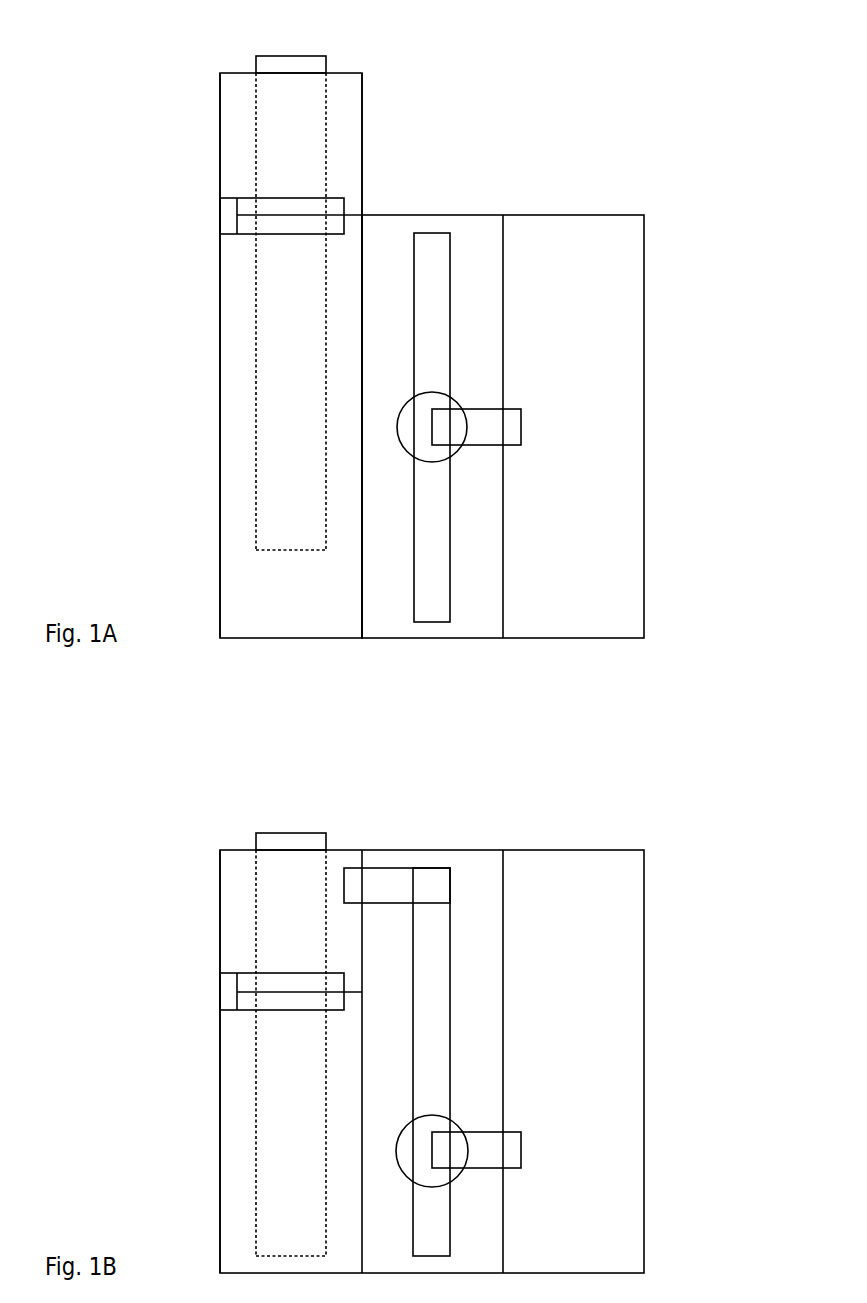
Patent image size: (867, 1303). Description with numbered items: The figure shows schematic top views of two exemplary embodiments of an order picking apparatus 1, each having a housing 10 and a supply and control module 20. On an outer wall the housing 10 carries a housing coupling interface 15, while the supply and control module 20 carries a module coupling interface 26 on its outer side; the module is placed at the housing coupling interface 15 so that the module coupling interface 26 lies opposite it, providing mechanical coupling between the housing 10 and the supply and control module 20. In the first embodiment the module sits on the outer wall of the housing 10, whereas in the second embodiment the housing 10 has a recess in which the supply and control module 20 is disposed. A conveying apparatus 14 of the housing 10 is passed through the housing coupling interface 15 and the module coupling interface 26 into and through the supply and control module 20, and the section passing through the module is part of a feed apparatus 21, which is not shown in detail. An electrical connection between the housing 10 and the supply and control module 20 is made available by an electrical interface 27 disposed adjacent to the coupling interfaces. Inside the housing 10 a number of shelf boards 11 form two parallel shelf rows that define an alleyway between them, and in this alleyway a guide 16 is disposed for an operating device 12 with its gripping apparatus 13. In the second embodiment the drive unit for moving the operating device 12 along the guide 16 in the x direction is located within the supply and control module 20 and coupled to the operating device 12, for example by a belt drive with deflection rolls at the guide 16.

In FIG. 1A, the order picking apparatus 1 is at (622, 149).
In FIG. 1B, the order picking apparatus 1 is at (641, 819).
In FIG. 1A, the housing 10 is at (644, 304).
In FIG. 1A, the shelf boards 11 is at (573, 603).
In FIG. 1B, the shelf boards 11 is at (573, 885).
In FIG. 1A, the operating device 12 is at (427, 453).
In FIG. 1B, the operating device 12 is at (427, 1177).
In FIG. 1A, the gripping apparatus 13 is at (485, 427).
In FIG. 1B, the gripping apparatus 13 is at (486, 1151).
In FIG. 1A, the conveying apparatus 14 is at (308, 550).
In FIG. 1B, the conveying apparatus 14 is at (308, 833).
In FIG. 1A, the housing coupling interface 15 is at (291, 225).
In FIG. 1B, the housing coupling interface 15 is at (291, 1000).
In FIG. 1A, the guide 16 is at (432, 587).
In FIG. 1B, the guide 16 is at (432, 920).
In FIG. 1A, the supply and control module 20 is at (362, 145).
In FIG. 1B, the supply and control module 20 is at (237, 850).
In FIG. 1A, the feed apparatus 21 is at (235, 110).
In FIG. 1B, the feed apparatus 21 is at (240, 886).
In FIG. 1A, the module coupling interface 26 is at (291, 203).
In FIG. 1B, the module coupling interface 26 is at (290, 977).
In FIG. 1A, the electrical interface 27 is at (230, 208).
In FIG. 1B, the electrical interface 27 is at (228, 983).